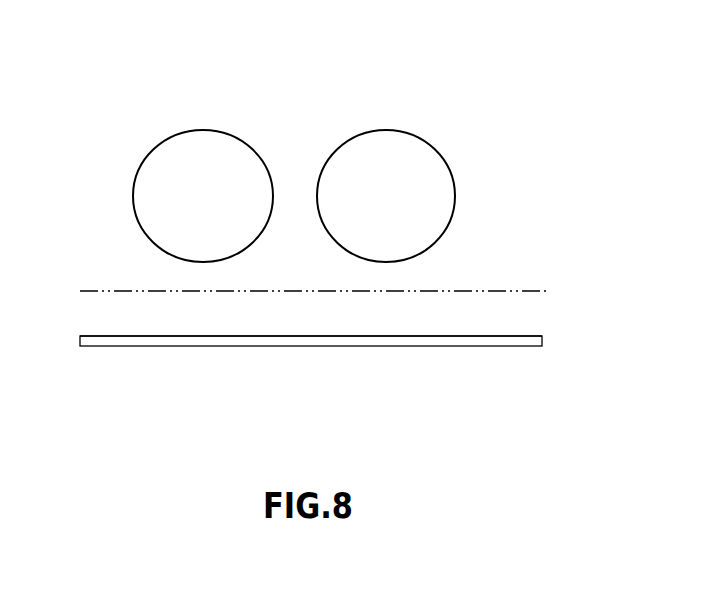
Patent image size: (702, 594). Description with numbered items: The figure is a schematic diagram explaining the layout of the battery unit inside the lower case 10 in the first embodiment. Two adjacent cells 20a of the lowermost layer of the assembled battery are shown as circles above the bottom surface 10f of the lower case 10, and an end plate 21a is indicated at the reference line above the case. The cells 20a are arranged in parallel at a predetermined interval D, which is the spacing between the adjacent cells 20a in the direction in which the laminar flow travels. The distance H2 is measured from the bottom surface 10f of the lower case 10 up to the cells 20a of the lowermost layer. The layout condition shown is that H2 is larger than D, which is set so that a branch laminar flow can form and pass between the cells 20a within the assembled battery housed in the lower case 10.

The cell 20a is at (362, 160).
The interval between cells D is at (316, 195).
The distance from bottom surface to cells H2 is at (203, 262).
The end plate 21a is at (400, 292).
The lower case 10 is at (480, 342).
The bottom surface of the lower case 10f is at (333, 336).